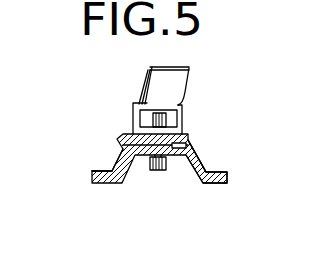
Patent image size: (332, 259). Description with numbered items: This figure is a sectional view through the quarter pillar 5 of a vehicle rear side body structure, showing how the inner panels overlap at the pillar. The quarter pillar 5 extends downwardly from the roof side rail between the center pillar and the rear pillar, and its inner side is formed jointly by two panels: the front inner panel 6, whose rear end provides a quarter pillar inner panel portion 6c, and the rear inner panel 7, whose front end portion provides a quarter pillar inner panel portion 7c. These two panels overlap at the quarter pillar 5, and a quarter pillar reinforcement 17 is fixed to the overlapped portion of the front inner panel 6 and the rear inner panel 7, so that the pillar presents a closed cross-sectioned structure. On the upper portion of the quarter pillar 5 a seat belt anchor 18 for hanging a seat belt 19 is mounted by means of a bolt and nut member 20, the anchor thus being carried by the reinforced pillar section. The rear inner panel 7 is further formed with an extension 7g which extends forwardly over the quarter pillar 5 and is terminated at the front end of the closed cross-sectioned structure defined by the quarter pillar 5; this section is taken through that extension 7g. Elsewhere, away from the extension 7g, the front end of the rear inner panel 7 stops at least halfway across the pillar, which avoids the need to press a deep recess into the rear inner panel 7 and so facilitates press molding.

The quarter pillar 5 is at (99, 141).
The front inner panel 6 is at (90, 189).
The quarter pillar inner panel portion 6c is at (137, 145).
The rear inner panel 7 is at (208, 192).
The extension 7g is at (98, 171).
The quarter pillar inner panel portion 7c is at (195, 150).
The quarter pillar reinforcement 17 is at (127, 184).
The seat belt anchor 18 is at (185, 130).
The seat belt 19 is at (183, 82).
The bolt and nut member 20 is at (153, 171).